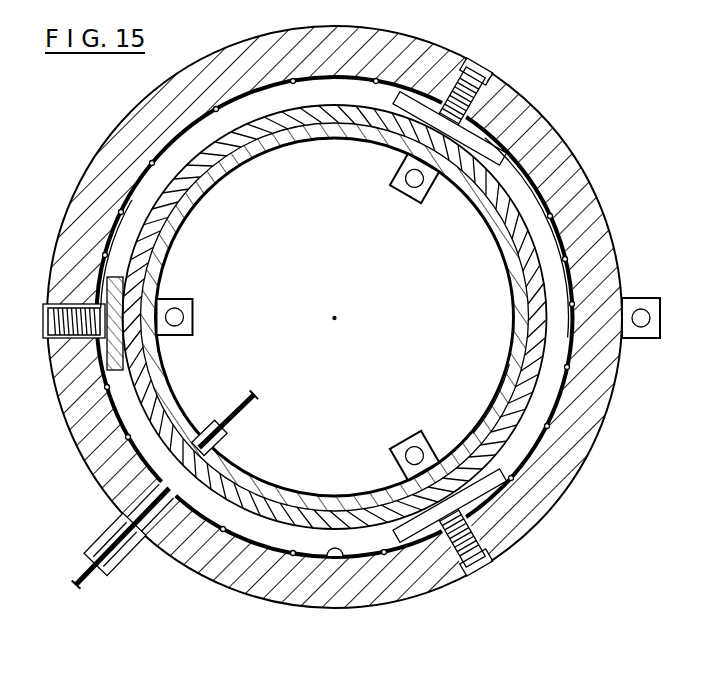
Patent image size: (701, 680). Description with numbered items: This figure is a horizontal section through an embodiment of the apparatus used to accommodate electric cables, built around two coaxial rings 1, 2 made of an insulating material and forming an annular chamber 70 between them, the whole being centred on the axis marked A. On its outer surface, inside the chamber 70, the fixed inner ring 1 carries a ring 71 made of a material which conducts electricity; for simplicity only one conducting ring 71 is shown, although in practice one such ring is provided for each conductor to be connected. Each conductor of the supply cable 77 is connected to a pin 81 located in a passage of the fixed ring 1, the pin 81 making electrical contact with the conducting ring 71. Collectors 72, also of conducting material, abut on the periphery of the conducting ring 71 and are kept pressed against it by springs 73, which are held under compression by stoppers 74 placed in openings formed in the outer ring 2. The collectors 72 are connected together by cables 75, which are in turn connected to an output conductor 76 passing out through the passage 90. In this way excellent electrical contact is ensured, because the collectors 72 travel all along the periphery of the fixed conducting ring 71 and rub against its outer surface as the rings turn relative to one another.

The ring 1 is at (293, 133).
The ring 2 is at (78, 205).
The annular chamber 70 is at (267, 103).
The conducting ring 71 is at (240, 133).
The collectors 72 is at (540, 175).
The springs 73 is at (83, 305).
The stoppers 74 is at (55, 322).
The cables 75 is at (567, 265).
The output conductor 76 is at (82, 582).
The supply cable 77 is at (248, 412).
The pin 81 is at (195, 440).
The passage 90 is at (122, 533).
The axis A is at (336, 318).